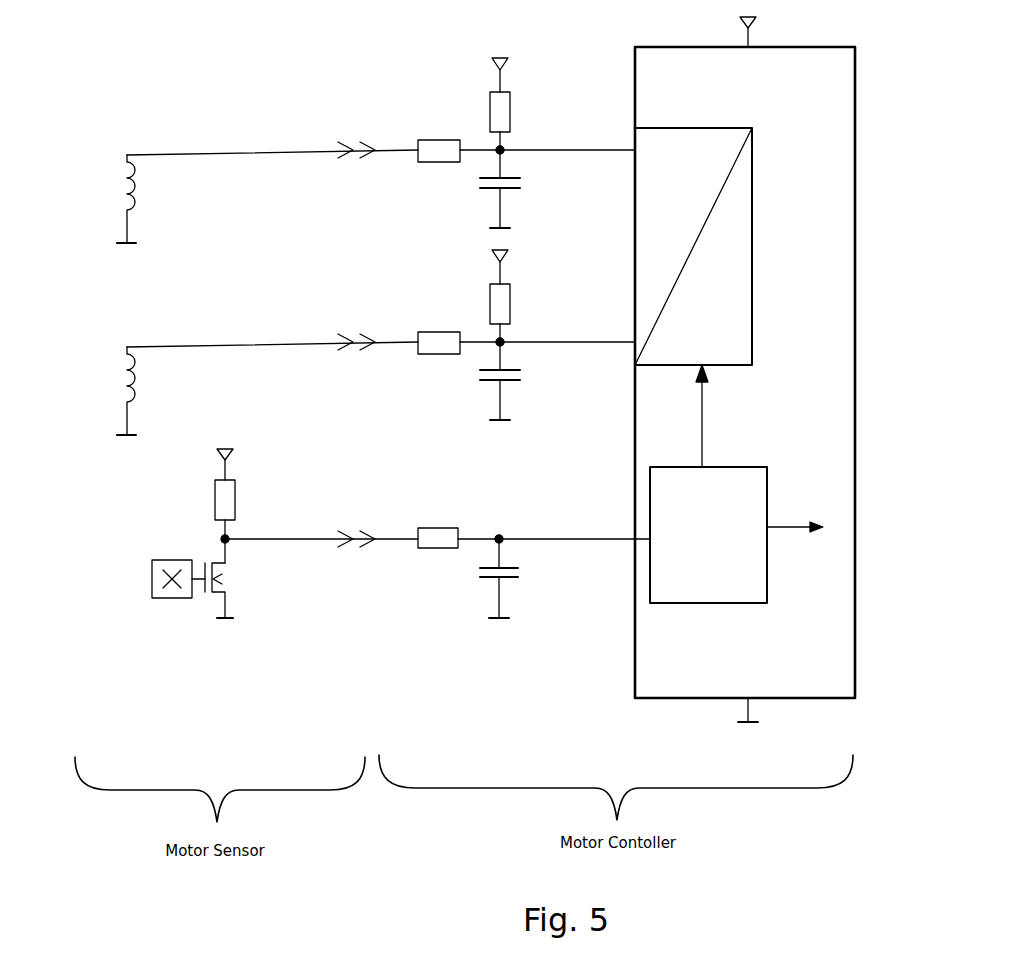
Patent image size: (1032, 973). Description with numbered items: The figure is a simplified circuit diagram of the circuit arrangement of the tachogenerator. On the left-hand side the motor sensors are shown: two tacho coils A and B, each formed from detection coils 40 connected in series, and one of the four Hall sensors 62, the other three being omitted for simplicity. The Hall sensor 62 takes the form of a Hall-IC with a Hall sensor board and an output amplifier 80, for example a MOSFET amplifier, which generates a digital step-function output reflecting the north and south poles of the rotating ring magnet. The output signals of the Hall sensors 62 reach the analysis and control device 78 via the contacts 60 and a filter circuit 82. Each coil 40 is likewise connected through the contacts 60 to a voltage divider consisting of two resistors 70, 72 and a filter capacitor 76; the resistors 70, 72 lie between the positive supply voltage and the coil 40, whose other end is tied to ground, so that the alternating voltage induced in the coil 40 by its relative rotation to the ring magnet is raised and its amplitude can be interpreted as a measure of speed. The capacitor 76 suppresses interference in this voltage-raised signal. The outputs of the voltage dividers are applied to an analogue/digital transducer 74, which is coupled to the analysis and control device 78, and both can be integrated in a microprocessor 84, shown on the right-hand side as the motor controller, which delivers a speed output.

The detection coil 40 is at (146, 194).
The contacts 60 is at (352, 131).
The Hall sensor 62 is at (180, 560).
The resistor 70 is at (447, 163).
The resistor 72 is at (504, 108).
The analogue/digital transducer 74 is at (737, 232).
The filter capacitor 76 is at (520, 196).
The analysis and control device 78 is at (745, 570).
The output amplifier 80 is at (232, 596).
The filter circuit 82 is at (448, 573).
The microprocessor 84 is at (852, 223).